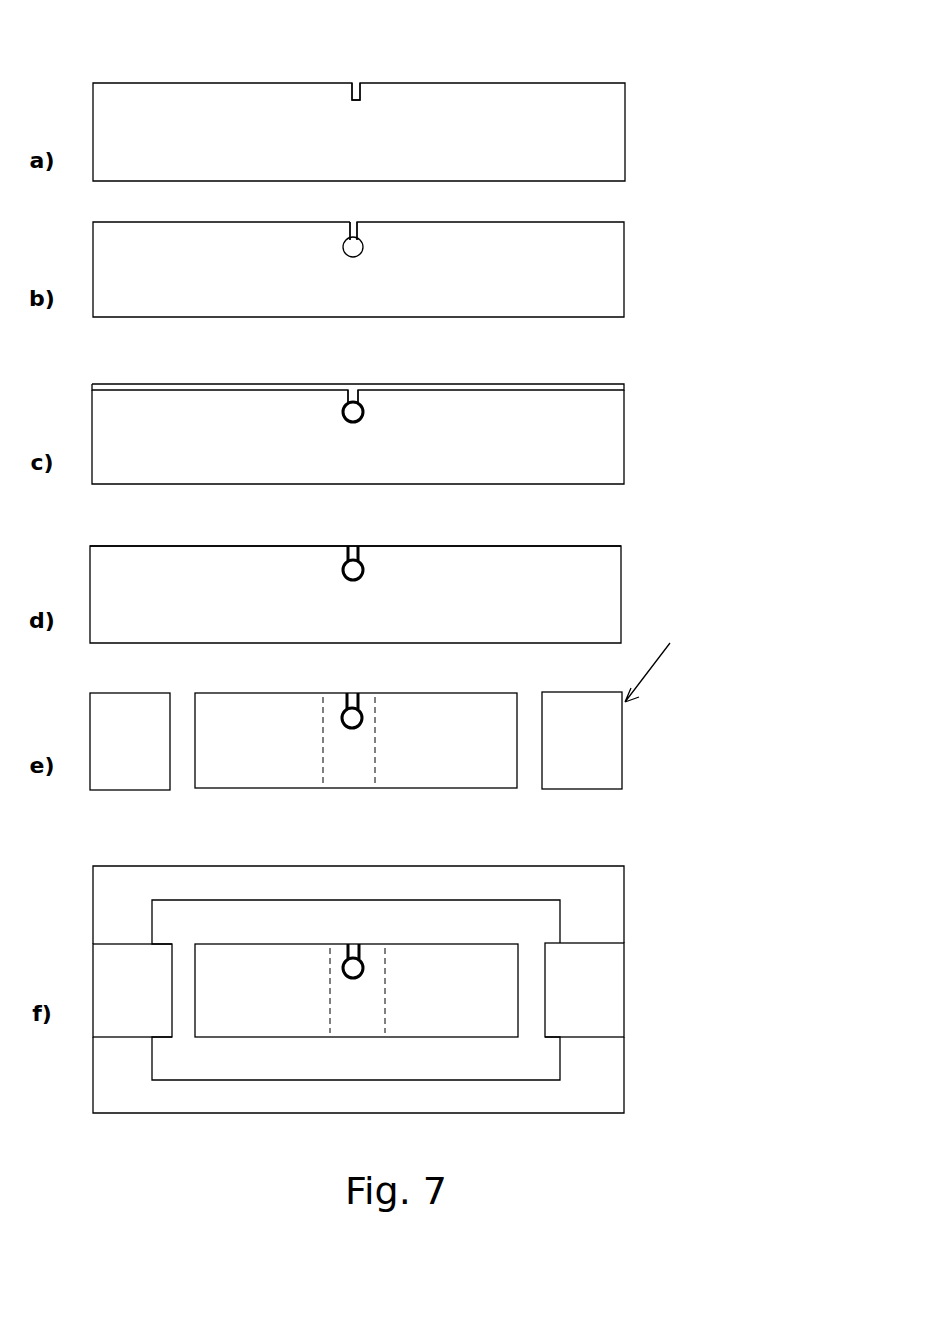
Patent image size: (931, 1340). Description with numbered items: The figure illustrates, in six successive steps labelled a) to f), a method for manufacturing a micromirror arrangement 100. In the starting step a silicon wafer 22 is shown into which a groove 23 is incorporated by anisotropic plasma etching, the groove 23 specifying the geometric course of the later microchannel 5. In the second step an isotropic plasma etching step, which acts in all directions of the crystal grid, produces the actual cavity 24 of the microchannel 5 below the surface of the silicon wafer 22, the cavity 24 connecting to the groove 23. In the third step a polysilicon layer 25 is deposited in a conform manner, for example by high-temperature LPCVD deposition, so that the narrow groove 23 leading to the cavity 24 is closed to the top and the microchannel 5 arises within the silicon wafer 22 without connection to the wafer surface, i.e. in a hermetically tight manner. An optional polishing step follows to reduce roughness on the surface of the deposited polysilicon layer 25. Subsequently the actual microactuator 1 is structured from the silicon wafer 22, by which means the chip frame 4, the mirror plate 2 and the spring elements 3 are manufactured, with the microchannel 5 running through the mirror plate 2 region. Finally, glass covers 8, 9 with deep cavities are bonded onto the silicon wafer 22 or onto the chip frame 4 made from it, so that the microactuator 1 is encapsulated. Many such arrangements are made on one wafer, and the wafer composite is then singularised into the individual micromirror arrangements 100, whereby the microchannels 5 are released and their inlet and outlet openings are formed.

The microactuator 1 is at (651, 728).
The mirror plate 2 is at (440, 772).
The spring elements 3 is at (348, 768).
The chip frame 4 is at (126, 765).
The microchannel 5 is at (344, 405).
The glass cover 8 is at (572, 887).
The glass cover 9 is at (575, 1096).
The silicon wafer 22 is at (598, 130).
The groove 23 is at (370, 84).
The cavity 24 is at (366, 246).
The polysilicon layer 25 is at (400, 382).
The micromirror arrangement 100 is at (692, 894).